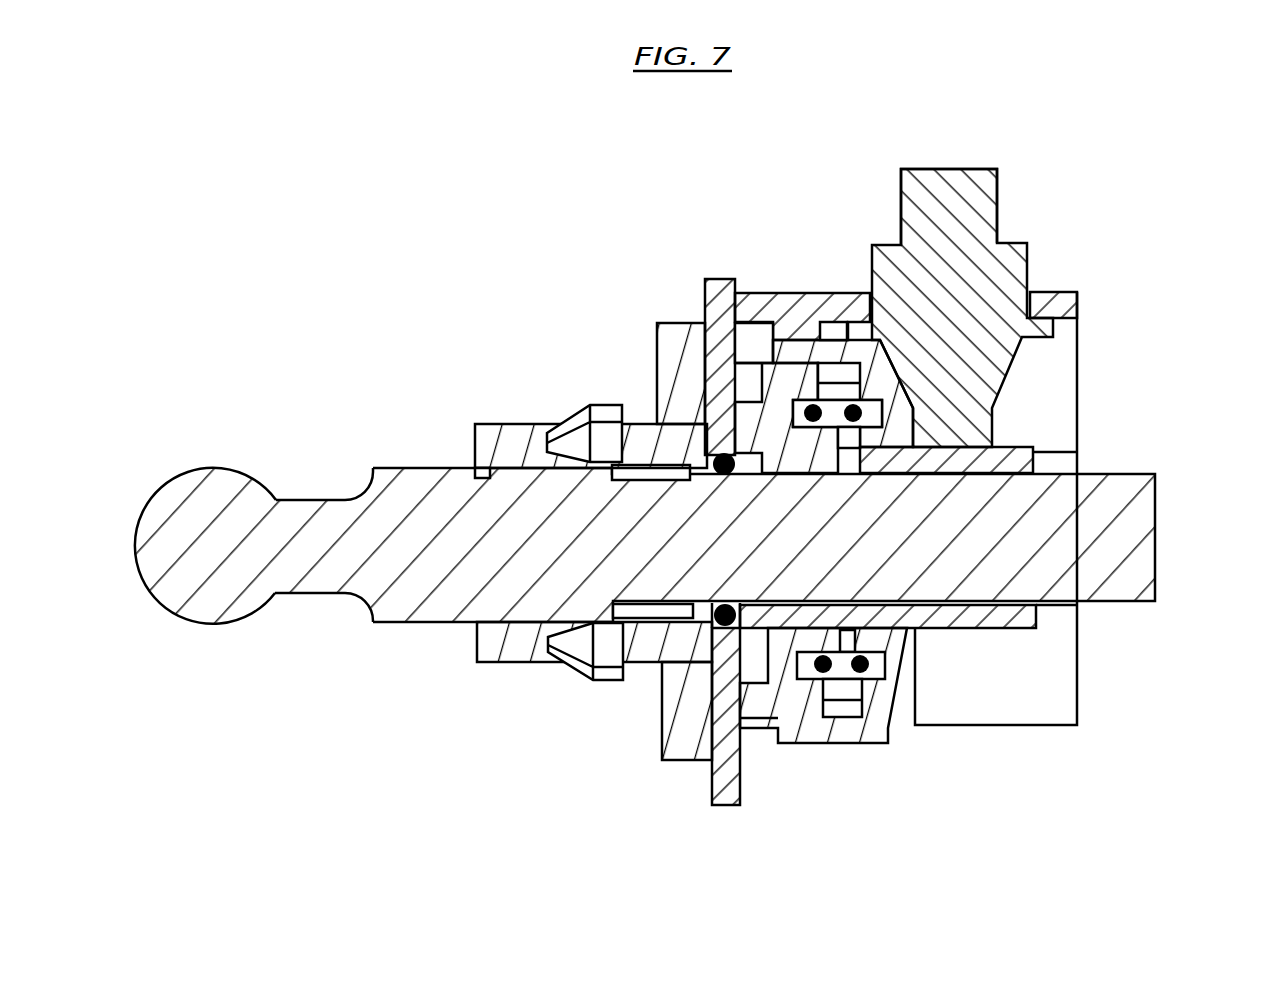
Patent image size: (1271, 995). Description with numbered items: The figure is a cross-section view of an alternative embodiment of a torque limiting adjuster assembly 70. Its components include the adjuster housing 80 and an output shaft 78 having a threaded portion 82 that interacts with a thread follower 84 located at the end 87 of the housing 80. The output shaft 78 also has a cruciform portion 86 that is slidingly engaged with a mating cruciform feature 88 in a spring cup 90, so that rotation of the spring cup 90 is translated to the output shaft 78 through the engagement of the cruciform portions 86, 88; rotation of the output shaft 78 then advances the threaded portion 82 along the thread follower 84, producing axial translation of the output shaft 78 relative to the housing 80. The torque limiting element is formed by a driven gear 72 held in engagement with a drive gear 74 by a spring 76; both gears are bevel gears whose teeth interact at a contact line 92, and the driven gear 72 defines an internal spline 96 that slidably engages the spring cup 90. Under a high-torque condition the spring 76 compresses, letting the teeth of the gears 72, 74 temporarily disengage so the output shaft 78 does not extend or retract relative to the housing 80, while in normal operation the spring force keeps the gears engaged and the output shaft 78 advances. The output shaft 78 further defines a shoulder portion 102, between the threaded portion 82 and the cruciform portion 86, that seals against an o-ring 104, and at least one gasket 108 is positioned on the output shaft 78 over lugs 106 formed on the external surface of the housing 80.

The torque limiting adjuster assembly 70 is at (593, 345).
The driven gear 72 is at (877, 377).
The drive gear 74 is at (955, 168).
The spring 76 is at (865, 664).
The output shaft 78 is at (232, 480).
The adjuster housing 80 is at (721, 280).
The threaded portion 82 is at (387, 607).
The thread follower 84 is at (483, 476).
The cruciform portion 86 is at (1137, 532).
The end of the housing 87 is at (472, 640).
The mating cruciform feature 88 is at (1028, 447).
The spring cup 90 is at (763, 372).
The contact line 92 is at (907, 393).
The internal spline 96 is at (838, 372).
The shoulder portion 102 is at (675, 560).
The o-ring 104 is at (743, 630).
The lugs 106 is at (607, 678).
The gasket 108 is at (675, 752).